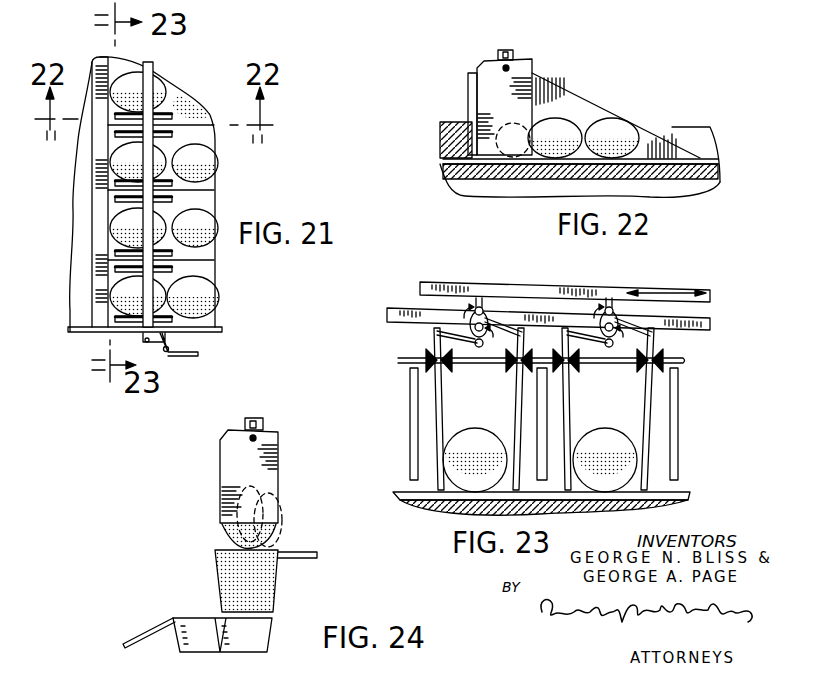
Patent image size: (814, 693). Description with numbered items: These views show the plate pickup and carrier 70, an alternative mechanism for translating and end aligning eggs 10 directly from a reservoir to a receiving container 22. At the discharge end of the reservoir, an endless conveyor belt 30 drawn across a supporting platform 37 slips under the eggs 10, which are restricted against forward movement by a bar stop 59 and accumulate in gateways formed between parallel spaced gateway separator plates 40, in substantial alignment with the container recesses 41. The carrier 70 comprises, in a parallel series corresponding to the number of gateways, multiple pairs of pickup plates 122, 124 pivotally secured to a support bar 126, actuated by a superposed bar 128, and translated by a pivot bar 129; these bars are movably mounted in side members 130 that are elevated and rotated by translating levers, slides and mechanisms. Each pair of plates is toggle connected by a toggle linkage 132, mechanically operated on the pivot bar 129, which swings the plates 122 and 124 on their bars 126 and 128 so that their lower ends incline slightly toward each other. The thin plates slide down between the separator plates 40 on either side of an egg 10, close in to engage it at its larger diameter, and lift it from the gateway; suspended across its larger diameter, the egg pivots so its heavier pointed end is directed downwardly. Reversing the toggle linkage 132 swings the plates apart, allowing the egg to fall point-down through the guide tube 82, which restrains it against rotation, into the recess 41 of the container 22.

In FIG. 21, the eggs 10 is at (156, 78).
In FIG. 22, the eggs 10 is at (617, 131).
In FIG. 23, the eggs 10 is at (468, 437).
In FIG. 24, the container 22 is at (273, 630).
In FIG. 21, the conveyor belt 30 is at (176, 95).
In FIG. 22, the conveyor belt 30 is at (523, 164).
In FIG. 23, the conveyor belt 30 is at (404, 492).
In FIG. 22, the supporting platform 37 is at (677, 178).
In FIG. 23, the supporting platform 37 is at (418, 511).
In FIG. 22, the gateway separator plates 40 is at (605, 102).
In FIG. 23, the gateway separator plates 40 is at (410, 418).
In FIG. 24, the container recess 41 is at (209, 617).
In FIG. 21, the bar stop 59 is at (95, 198).
In FIG. 22, the bar stop 59 is at (460, 121).
In FIG. 23, the plate pickup and carrier 70 is at (559, 307).
In FIG. 24, the guide tube 82 is at (216, 570).
In FIG. 21, the pickup plate 122 is at (112, 63).
In FIG. 23, the pickup plate 122 is at (441, 386).
In FIG. 21, the pickup plate 124 is at (167, 114).
In FIG. 22, the pickup plate 124 is at (482, 73).
In FIG. 23, the pickup plate 124 is at (514, 414).
In FIG. 24, the pickup plate 124 is at (279, 460).
In FIG. 22, the support bar 126 is at (508, 67).
In FIG. 23, the support bar 126 is at (406, 359).
In FIG. 24, the support bar 126 is at (254, 438).
In FIG. 21, the superposed bar 128 is at (153, 279).
In FIG. 23, the superposed bar 128 is at (535, 291).
In FIG. 23, the pivot bar 129 is at (699, 326).
In FIG. 21, the side members 130 is at (204, 334).
In FIG. 23, the toggle linkage 132 is at (481, 311).